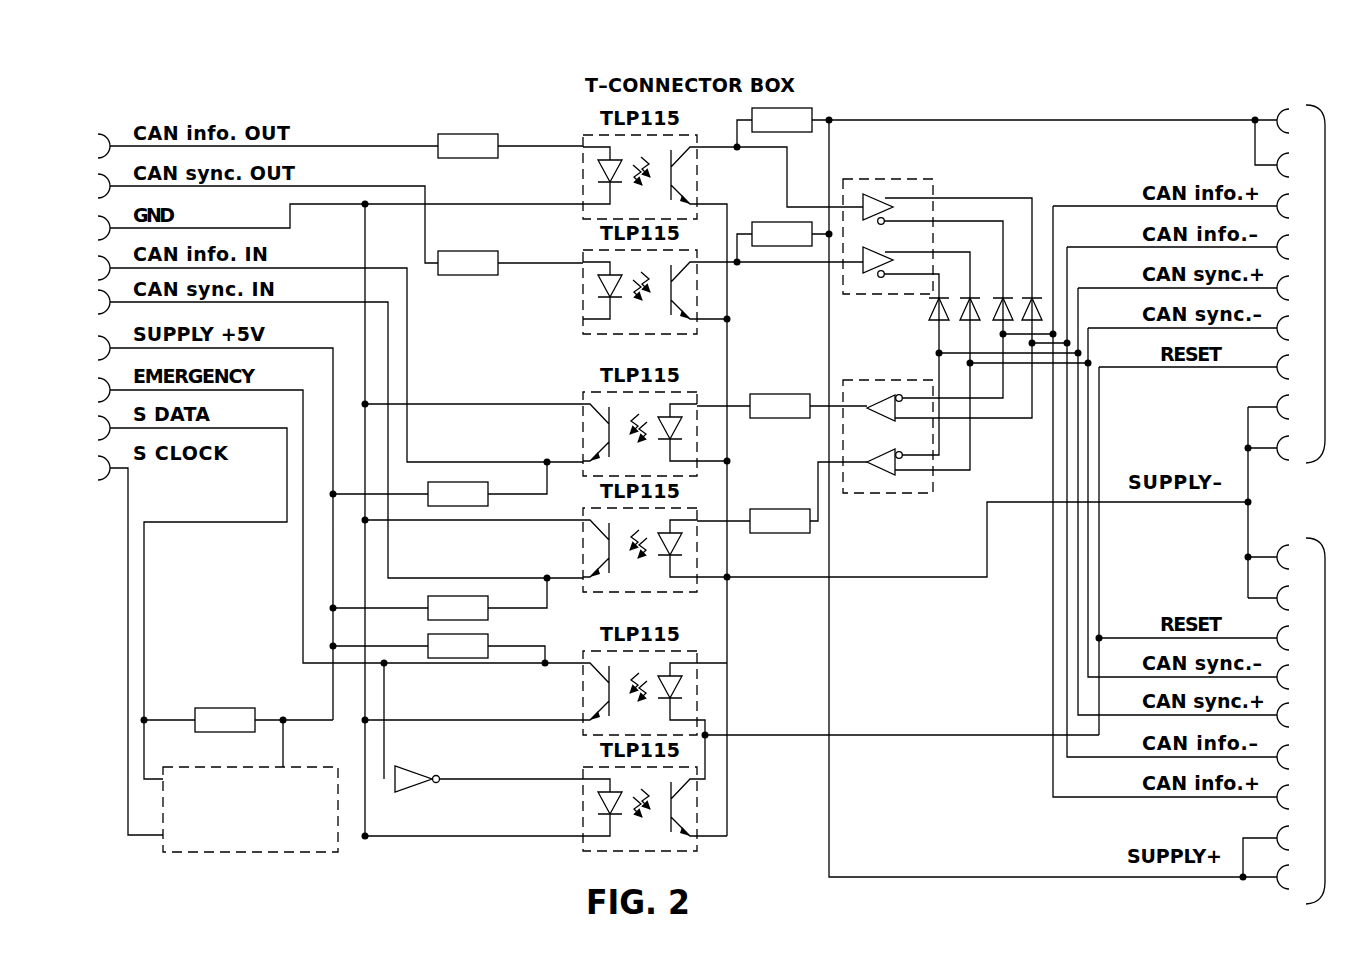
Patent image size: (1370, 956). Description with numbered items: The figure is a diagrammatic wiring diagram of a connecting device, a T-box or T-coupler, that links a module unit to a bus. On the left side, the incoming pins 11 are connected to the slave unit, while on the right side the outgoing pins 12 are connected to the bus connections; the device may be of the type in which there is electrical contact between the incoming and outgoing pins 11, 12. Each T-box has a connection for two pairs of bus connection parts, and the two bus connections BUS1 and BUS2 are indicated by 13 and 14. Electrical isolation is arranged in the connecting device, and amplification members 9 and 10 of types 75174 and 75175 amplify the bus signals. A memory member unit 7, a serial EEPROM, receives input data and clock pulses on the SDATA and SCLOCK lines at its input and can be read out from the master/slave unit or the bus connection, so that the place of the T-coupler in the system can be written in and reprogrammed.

The memory member unit 7 is at (312, 773).
The amplification member 9 is at (934, 188).
The amplification member 10 is at (904, 494).
The incoming pins 11 is at (100, 129).
The outgoing pins 12 is at (1263, 94).
The bus connection 13 is at (1312, 102).
The bus connection 14 is at (1306, 538).